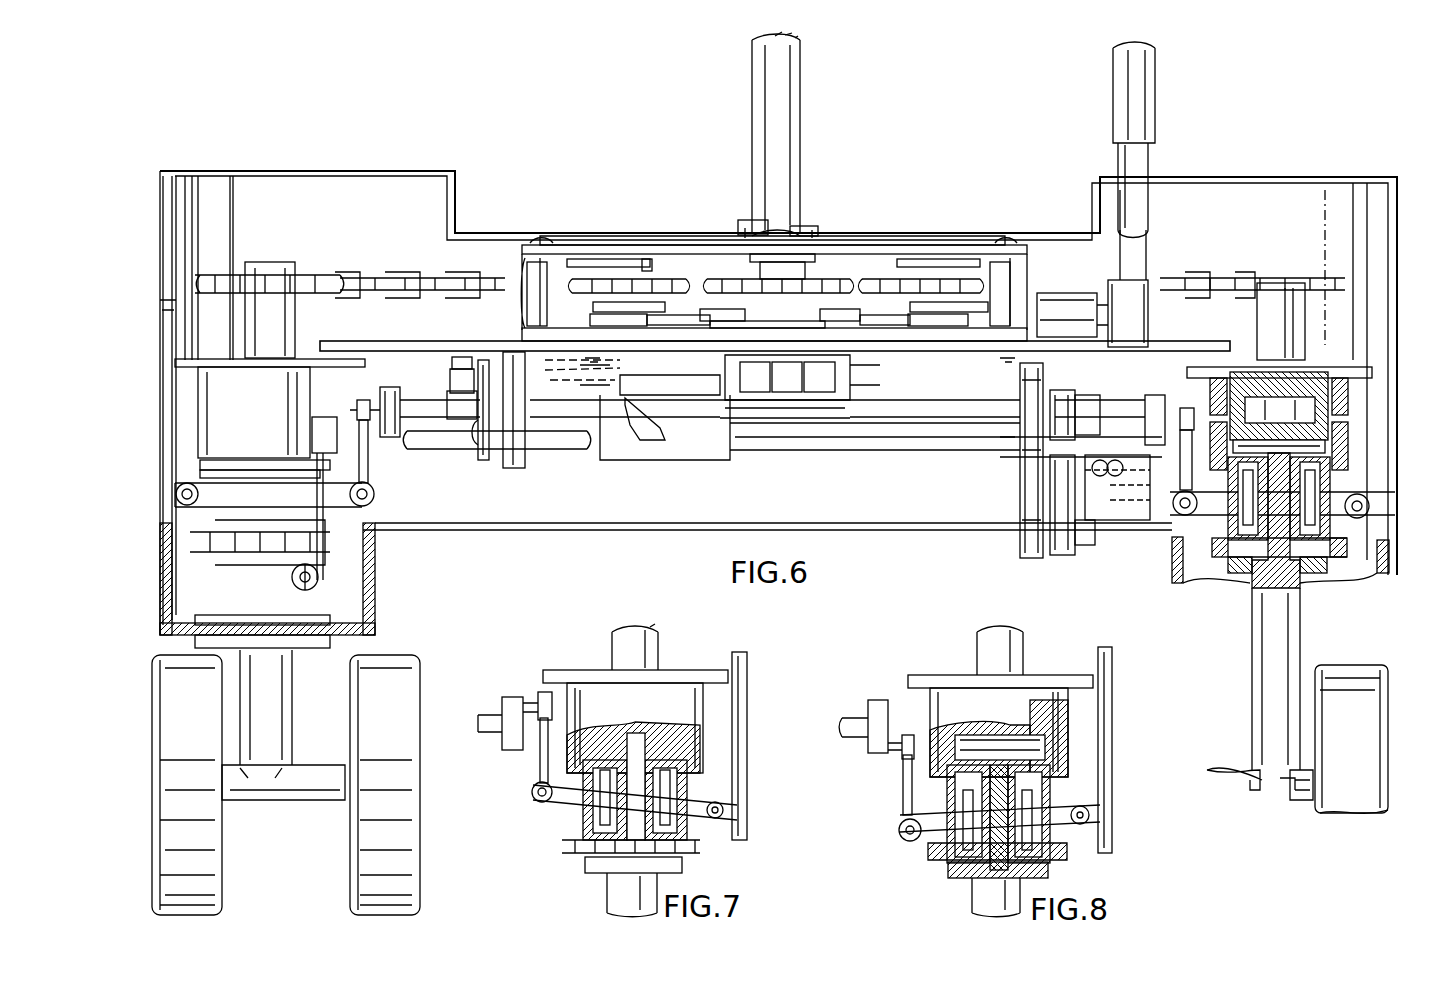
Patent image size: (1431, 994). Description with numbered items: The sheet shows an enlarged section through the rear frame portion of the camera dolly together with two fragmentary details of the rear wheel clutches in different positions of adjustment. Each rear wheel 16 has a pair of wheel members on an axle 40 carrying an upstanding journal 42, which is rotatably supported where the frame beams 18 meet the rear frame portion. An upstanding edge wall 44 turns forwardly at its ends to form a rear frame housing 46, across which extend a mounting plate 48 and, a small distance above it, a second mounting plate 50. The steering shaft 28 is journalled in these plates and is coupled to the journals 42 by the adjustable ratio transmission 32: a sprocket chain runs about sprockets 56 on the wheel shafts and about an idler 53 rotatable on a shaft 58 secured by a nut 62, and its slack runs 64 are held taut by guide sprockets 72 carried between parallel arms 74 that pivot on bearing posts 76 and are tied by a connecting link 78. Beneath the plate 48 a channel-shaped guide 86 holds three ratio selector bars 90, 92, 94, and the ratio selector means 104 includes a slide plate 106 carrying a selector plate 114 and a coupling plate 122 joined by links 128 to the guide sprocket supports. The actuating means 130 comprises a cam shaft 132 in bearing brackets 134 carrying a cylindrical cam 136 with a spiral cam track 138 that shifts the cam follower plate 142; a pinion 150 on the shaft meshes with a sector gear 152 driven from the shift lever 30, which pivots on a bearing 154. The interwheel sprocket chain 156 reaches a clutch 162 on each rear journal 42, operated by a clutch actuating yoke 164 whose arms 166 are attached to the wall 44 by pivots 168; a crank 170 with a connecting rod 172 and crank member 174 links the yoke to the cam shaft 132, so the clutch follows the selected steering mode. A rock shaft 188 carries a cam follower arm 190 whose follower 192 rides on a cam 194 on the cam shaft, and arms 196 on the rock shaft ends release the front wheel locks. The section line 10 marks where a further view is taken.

In FIG. 6, the section line 10 is at (775, 195).
In FIG. 6, the rear dolly wheels 16 is at (368, 805).
In FIG. 6, the frame beams 18 is at (370, 588).
In FIG. 6, the steering shaft 28 is at (790, 102).
In FIG. 6, the shift lever 30 is at (1150, 100).
In FIG. 6, the adjustable ratio transmission 32 is at (648, 205).
In FIG. 6, the axle 40 is at (305, 790).
In FIG. 6, the journal 42 is at (278, 333).
In FIG. 7, the journal 42 is at (618, 643).
In FIG. 8, the journal 42 is at (990, 650).
In FIG. 6, the edge wall 44 is at (160, 355).
In FIG. 7, the edge wall 44 is at (748, 752).
In FIG. 8, the edge wall 44 is at (1113, 753).
In FIG. 6, the rear frame housing 46 is at (478, 232).
In FIG. 6, the mounting plate 48 is at (368, 348).
In FIG. 6, the second mounting plate 50 is at (935, 246).
In FIG. 6, the idler sprocket 53 is at (740, 280).
In FIG. 6, the wheel sprockets 56 is at (290, 280).
In FIG. 6, the idler shaft 58 is at (795, 222).
In FIG. 6, the nut 62 is at (810, 233).
In FIG. 6, the drive band run 64 is at (352, 280).
In FIG. 6, the drive band guide sprocket 72 is at (645, 281).
In FIG. 6, the parallel arms 74 is at (522, 296).
In FIG. 6, the bearing post 76 is at (540, 240).
In FIG. 6, the connecting link 78 is at (605, 306).
In FIG. 6, the channel-shaped guide 86 is at (850, 405).
In FIG. 6, the slide bar 90 is at (755, 377).
In FIG. 6, the slide bar 92 is at (787, 377).
In FIG. 6, the fixed bar 94 is at (819, 377).
In FIG. 6, the ratio selector means 104 is at (658, 455).
In FIG. 6, the slide plate 106 is at (840, 360).
In FIG. 6, the selector plate 114 is at (615, 370).
In FIG. 6, the coupling plate 122 is at (715, 334).
In FIG. 6, the links 128 is at (715, 314).
In FIG. 6, the actuating means 130 is at (1105, 472).
In FIG. 6, the cam shaft 132 is at (437, 390).
In FIG. 7, the cam shaft 132 is at (502, 715).
In FIG. 8, the cam shaft 132 is at (852, 720).
In FIG. 6, the bearing brackets 134 is at (525, 470).
In FIG. 6, the cylindrical cam 136 is at (607, 448).
In FIG. 6, the spiral cam track 138 is at (655, 445).
In FIG. 6, the cam follower plate 142 is at (615, 375).
In FIG. 6, the pinion 150 is at (1088, 383).
In FIG. 6, the sector gear 152 is at (1050, 555).
In FIG. 6, the bearing 154 is at (1062, 292).
In FIG. 6, the drive band 156 is at (210, 545).
In FIG. 6, the clutch 162 is at (1322, 365).
In FIG. 7, the clutch 162 is at (765, 665).
In FIG. 8, the clutch 162 is at (1125, 665).
In FIG. 6, the clutch actuating yoke 164 is at (350, 500).
In FIG. 7, the clutch actuating yoke 164 is at (565, 808).
In FIG. 8, the clutch actuating yoke 164 is at (918, 838).
In FIG. 6, the yoke arms 166 is at (232, 498).
In FIG. 6, the pivots 168 is at (176, 494).
In FIG. 7, the crank 170 is at (507, 690).
In FIG. 8, the crank 170 is at (866, 692).
In FIG. 6, the connecting rod 172 is at (366, 465).
In FIG. 7, the connecting rod 172 is at (540, 748).
In FIG. 8, the connecting rod 172 is at (903, 766).
In FIG. 6, the crank member 174 is at (388, 400).
In FIG. 7, the crank member 174 is at (513, 735).
In FIG. 8, the crank member 174 is at (888, 740).
In FIG. 6, the rock shaft 188 is at (442, 443).
In FIG. 6, the cam follower arm 190 is at (480, 462).
In FIG. 6, the cam follower 192 is at (463, 357).
In FIG. 6, the cam 194 is at (458, 396).
In FIG. 6, the rock shaft arms 196 is at (318, 577).